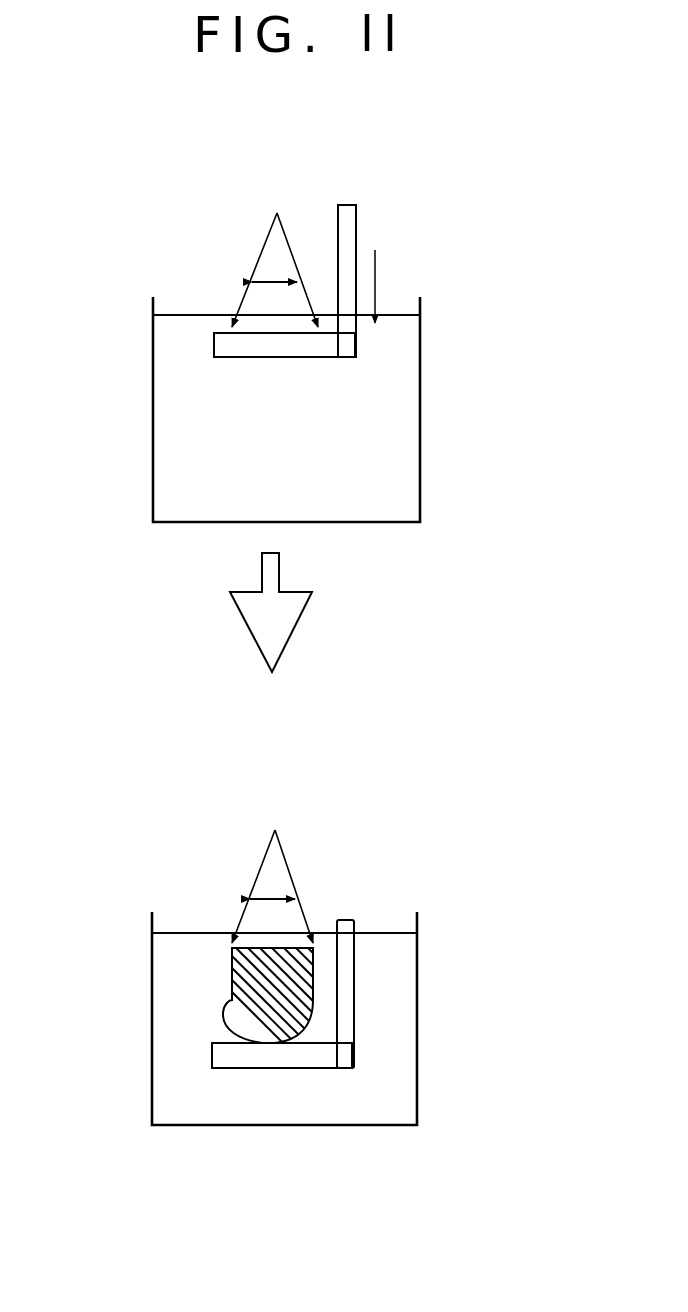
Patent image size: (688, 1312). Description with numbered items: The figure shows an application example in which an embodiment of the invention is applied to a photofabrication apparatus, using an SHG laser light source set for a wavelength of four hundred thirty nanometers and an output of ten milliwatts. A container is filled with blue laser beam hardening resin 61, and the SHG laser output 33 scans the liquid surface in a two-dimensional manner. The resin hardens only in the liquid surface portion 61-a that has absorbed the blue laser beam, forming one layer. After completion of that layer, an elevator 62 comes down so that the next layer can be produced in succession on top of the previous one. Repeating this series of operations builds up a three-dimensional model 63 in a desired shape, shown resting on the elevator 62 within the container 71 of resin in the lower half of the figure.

The SHG laser output 33 is at (247, 290).
The blue laser beam hardening resin 61 is at (393, 403).
The liquid surface portion 61-a is at (231, 326).
The elevator 62 is at (350, 240).
The three-dimensional model 63 is at (227, 1002).
The tank 71 is at (380, 1042).